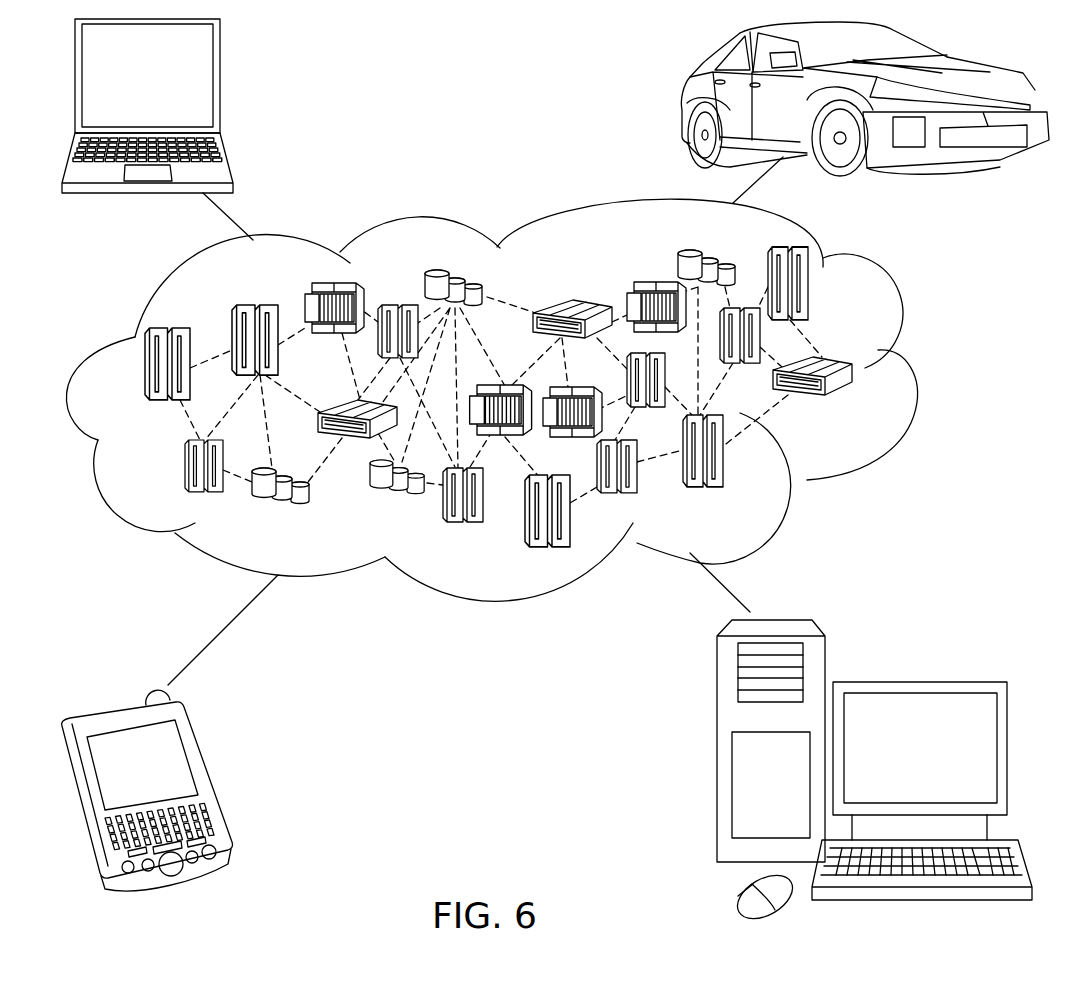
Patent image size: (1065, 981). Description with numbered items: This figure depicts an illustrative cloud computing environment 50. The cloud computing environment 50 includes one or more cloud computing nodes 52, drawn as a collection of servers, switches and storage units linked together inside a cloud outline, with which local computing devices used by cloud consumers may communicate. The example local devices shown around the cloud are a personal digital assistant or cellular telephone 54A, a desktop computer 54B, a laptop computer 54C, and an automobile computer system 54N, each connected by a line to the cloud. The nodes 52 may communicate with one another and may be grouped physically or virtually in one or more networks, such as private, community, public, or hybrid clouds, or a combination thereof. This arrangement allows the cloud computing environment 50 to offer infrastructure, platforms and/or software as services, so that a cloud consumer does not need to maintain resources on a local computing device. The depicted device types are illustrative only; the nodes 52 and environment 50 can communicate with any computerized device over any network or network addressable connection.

The cloud computing environment 50 is at (917, 374).
The cloud computing nodes 52 is at (860, 409).
The personal digital assistant (PDA) or cellular telephone 54A is at (208, 780).
The desktop computer 54B is at (917, 682).
The laptop computer 54C is at (222, 83).
The automobile computer system 54N is at (685, 100).